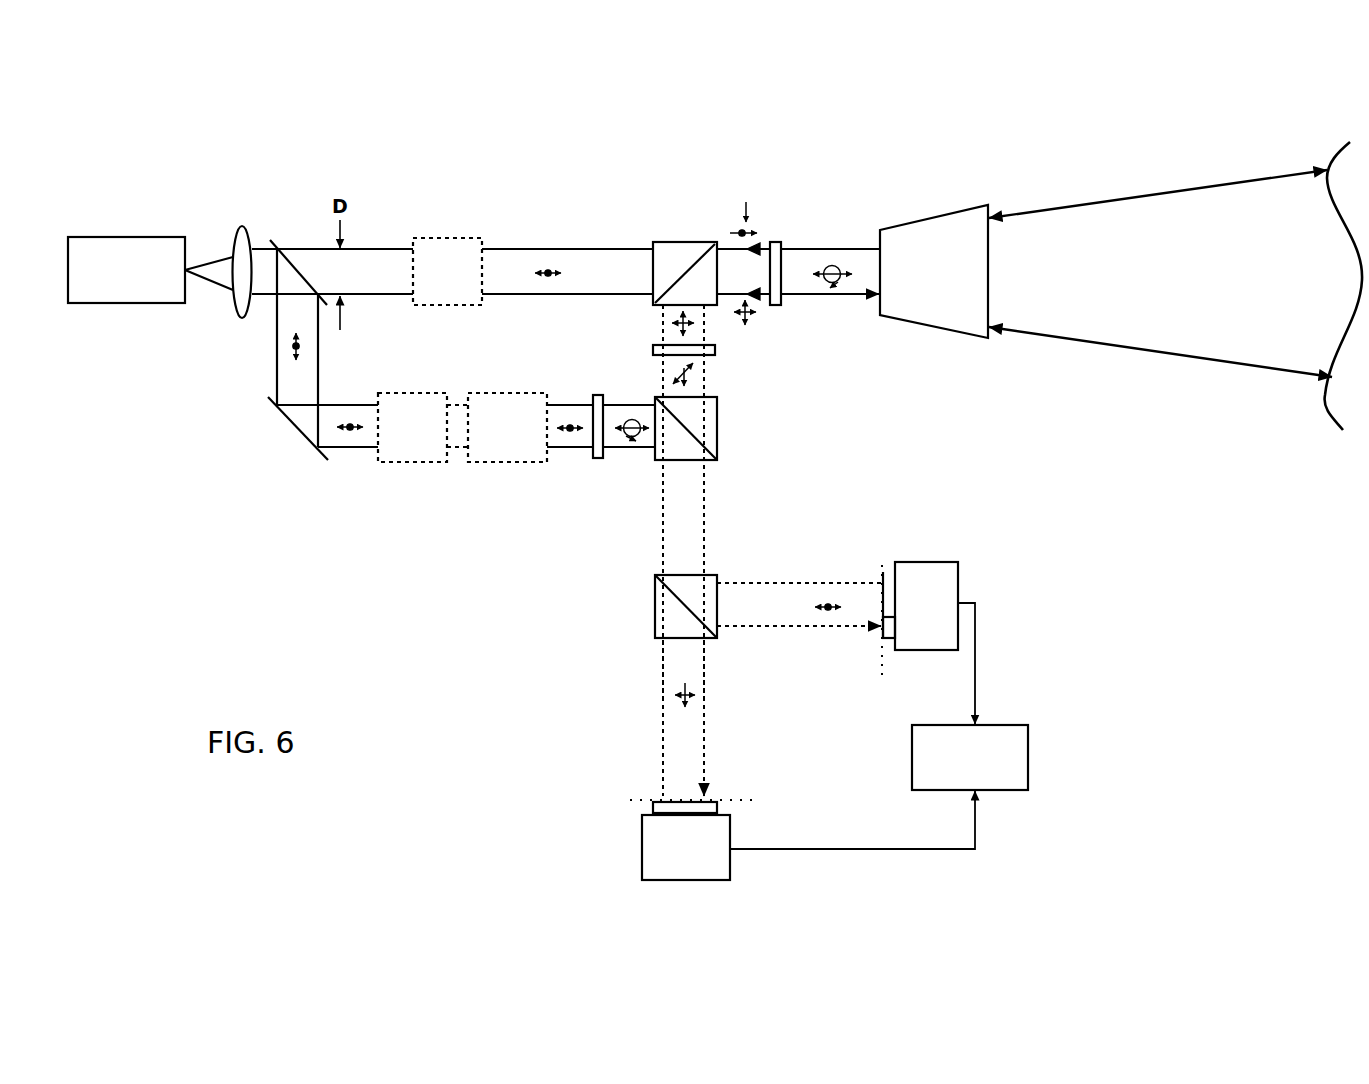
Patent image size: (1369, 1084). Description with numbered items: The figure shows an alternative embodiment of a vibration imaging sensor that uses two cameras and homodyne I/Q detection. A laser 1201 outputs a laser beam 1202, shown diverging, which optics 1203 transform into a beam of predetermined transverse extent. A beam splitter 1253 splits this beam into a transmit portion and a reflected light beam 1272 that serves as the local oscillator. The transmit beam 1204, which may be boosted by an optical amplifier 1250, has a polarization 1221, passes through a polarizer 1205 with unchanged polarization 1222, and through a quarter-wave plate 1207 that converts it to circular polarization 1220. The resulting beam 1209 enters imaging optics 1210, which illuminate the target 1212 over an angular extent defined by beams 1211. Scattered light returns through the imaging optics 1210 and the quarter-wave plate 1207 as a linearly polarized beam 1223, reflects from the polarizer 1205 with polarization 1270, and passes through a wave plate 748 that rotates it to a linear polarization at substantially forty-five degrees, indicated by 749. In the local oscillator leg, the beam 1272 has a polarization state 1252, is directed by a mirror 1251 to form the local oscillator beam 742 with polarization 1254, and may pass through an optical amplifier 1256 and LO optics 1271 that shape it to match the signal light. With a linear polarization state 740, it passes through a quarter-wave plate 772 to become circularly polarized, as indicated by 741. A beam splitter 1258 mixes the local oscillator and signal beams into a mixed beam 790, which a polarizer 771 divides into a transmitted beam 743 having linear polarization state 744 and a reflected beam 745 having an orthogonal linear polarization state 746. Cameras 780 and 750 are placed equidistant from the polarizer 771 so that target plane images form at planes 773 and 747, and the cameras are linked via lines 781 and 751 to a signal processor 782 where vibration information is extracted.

The laser 1201 is at (92, 237).
The laser beam 1202 is at (218, 260).
The optics 1203 is at (242, 228).
The beam splitter 1253 is at (270, 242).
The illumination beam 1204 is at (632, 250).
The optical amplifier 1250 is at (452, 237).
The polarization symbol 1221 is at (555, 263).
The polarizer 1205 is at (680, 240).
The polarization 1222 is at (758, 207).
The quarter-wave plate 1207 is at (777, 240).
The resulting beam 1209 is at (857, 248).
The circular polarization 1220 is at (838, 288).
The imaging optical system 1210 is at (917, 220).
The beams 1211 is at (1150, 198).
The target 1212 is at (1327, 408).
The linearly polarized beam 1223 is at (752, 318).
The polarization 1270 is at (692, 323).
The wave plate 748 is at (715, 353).
The polarization indication 749 is at (692, 378).
The light beam 1272 is at (275, 318).
The polarization state symbol 1252 is at (280, 348).
The mirror 1251 is at (268, 397).
The local oscillator beam 742 is at (466, 455).
The polarization state 1254 is at (343, 420).
The optical amplifier 1256 is at (420, 462).
The LO optics 1271 is at (498, 462).
The linear polarization state symbol 740 is at (572, 418).
The quarter-wave plate 772 is at (597, 462).
The circularly polarized beam symbol 741 is at (630, 412).
The beam splitter 1258 is at (657, 462).
The mixed beam 790 is at (660, 537).
The polarizer 771 is at (655, 623).
The reflected beam 745 is at (727, 628).
The orthogonal linear polarization state 746 is at (830, 613).
The image plane 747 is at (884, 633).
The camera 750 is at (958, 583).
The line 751 is at (975, 663).
The transmitted beam 743 is at (660, 663).
The linear polarization state 744 is at (663, 702).
The image plane 773 is at (674, 801).
The camera 780 is at (638, 853).
The line 781 is at (777, 852).
The signal processor 782 is at (922, 790).